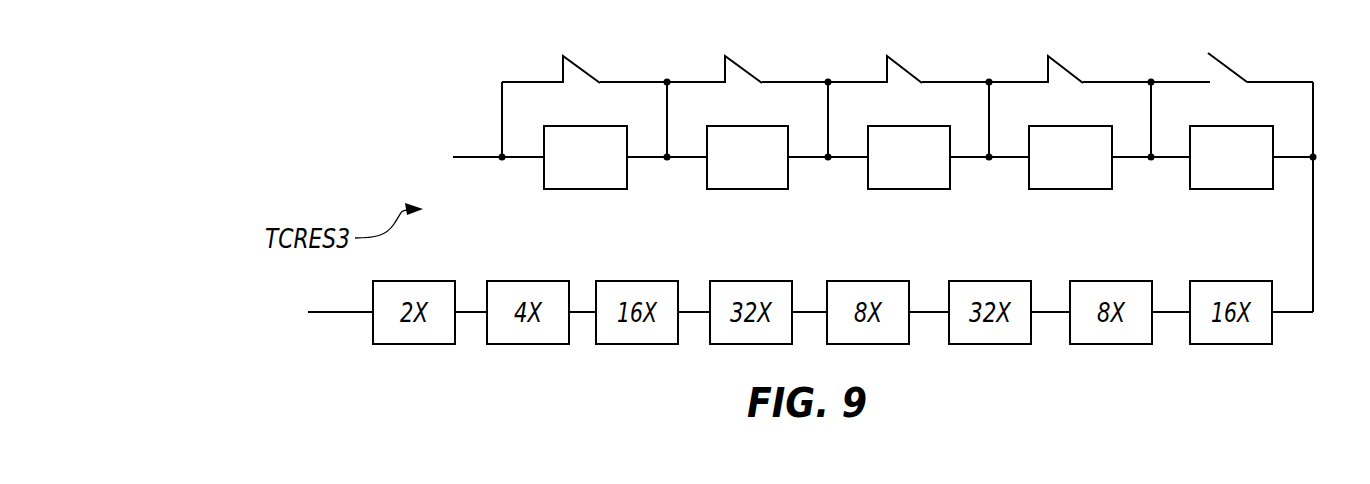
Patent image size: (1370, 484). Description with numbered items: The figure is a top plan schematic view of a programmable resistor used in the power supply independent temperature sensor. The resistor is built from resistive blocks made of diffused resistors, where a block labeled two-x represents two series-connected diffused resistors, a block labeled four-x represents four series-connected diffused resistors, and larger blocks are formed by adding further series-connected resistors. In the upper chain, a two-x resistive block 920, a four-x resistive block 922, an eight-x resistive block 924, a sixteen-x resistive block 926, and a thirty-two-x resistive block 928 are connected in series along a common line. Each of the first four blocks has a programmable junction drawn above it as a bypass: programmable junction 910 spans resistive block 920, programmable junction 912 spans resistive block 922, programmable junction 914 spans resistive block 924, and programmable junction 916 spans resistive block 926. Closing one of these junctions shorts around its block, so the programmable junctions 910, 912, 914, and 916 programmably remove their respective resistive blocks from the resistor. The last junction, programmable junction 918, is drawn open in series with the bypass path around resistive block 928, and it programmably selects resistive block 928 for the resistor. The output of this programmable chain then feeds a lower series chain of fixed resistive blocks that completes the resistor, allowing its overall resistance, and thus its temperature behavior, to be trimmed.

The programmable junction 910 is at (580, 65).
The programmable junction 912 is at (748, 65).
The programmable junction 914 is at (905, 65).
The programmable junction 916 is at (1067, 65).
The programmable junction 918 is at (1227, 65).
The resistive block 920 is at (582, 189).
The resistive block 922 is at (743, 189).
The resistive block 924 is at (905, 189).
The resistive block 926 is at (1067, 189).
The resistive block 928 is at (1227, 189).